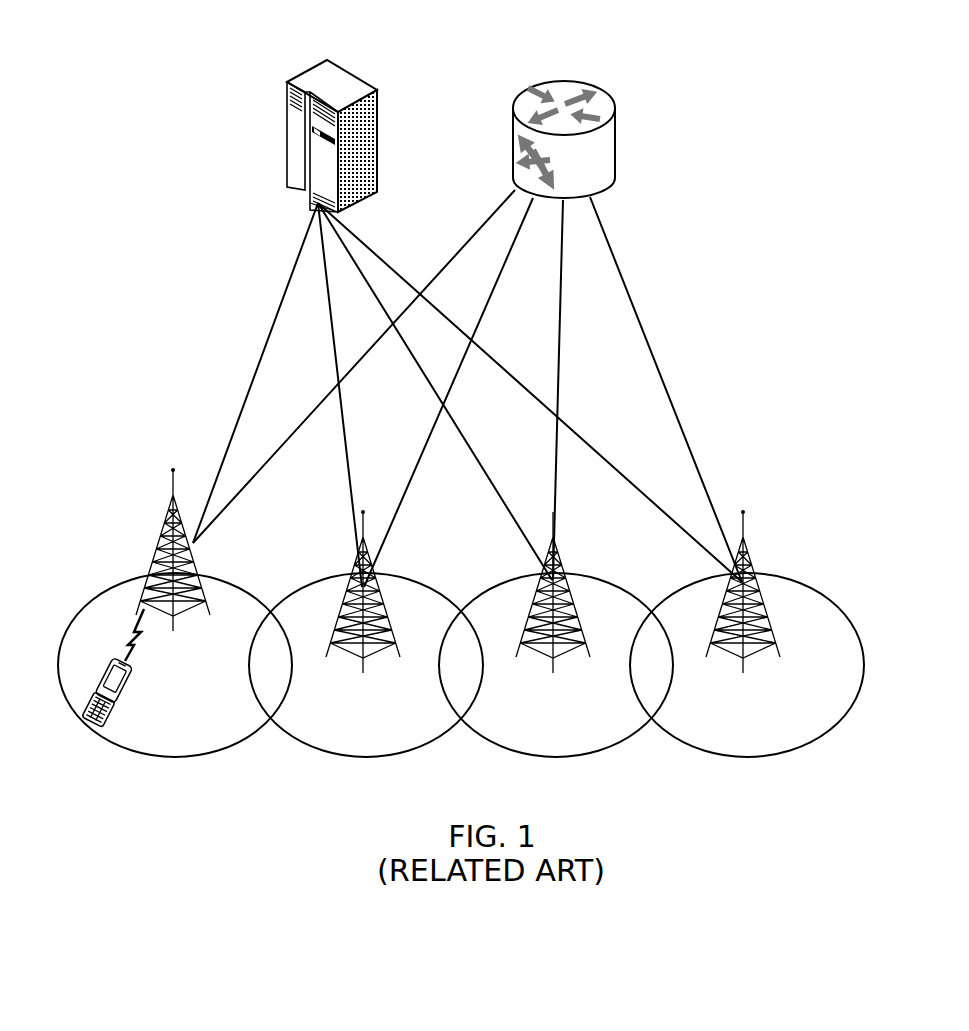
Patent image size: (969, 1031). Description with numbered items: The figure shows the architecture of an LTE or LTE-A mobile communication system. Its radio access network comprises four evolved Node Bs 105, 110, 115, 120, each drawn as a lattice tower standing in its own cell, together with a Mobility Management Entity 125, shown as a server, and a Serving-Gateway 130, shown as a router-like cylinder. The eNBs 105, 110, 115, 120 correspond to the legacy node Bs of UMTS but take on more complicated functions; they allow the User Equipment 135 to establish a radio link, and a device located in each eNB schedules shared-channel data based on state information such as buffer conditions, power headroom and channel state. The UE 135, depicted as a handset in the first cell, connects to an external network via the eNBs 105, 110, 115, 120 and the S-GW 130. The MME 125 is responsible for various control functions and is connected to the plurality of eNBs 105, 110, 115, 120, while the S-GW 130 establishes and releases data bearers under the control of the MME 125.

The evolved Node B 105 is at (158, 528).
The evolved Node B 110 is at (355, 553).
The evolved Node B 115 is at (563, 552).
The evolved Node B 120 is at (753, 552).
The Mobility Management Entity 125 is at (317, 78).
The Serving-Gateway 130 is at (560, 81).
The User Equipment 135 is at (127, 690).